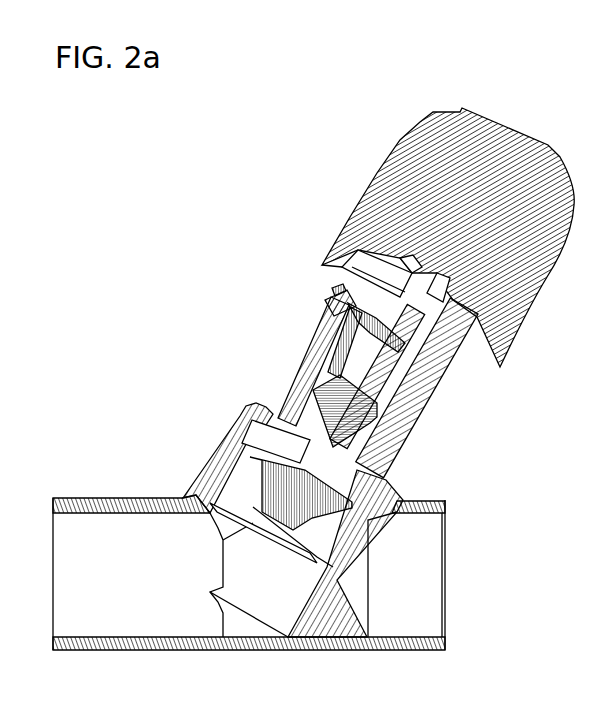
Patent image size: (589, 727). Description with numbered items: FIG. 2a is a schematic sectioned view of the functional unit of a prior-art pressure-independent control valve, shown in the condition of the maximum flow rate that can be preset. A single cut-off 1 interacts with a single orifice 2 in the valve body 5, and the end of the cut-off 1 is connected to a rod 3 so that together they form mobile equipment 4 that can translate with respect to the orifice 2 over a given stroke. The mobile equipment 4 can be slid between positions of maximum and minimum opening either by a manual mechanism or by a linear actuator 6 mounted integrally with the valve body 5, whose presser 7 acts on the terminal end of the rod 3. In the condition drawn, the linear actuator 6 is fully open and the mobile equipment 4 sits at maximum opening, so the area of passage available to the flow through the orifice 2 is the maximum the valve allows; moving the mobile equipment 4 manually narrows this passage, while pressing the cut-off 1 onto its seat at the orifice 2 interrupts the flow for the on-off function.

The cut-off 1 is at (253, 428).
The orifice 2 is at (253, 523).
The rod 3 is at (365, 360).
The mobile equipment 4 is at (379, 384).
The valve body 5 is at (452, 371).
The linear actuator 6 is at (425, 165).
The presser 7 is at (345, 258).